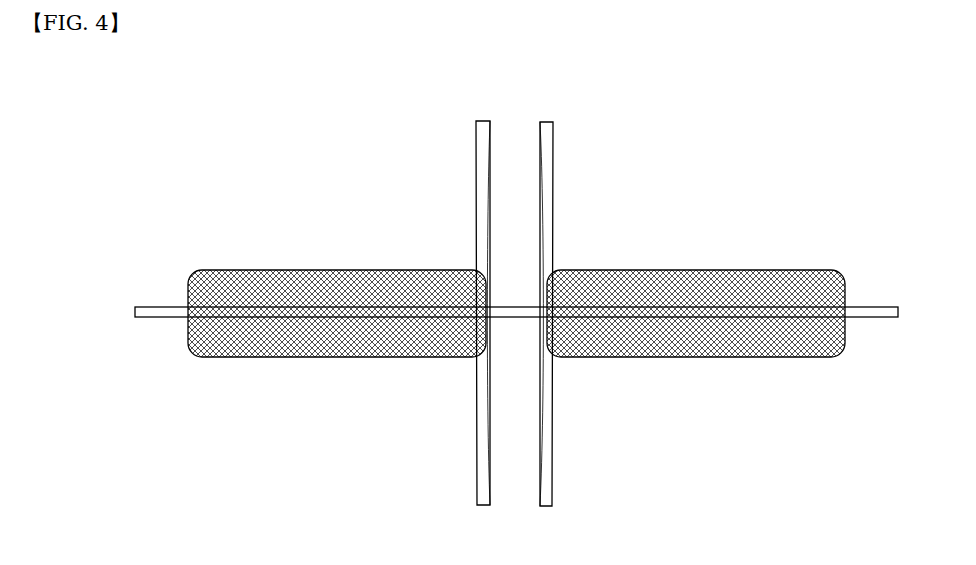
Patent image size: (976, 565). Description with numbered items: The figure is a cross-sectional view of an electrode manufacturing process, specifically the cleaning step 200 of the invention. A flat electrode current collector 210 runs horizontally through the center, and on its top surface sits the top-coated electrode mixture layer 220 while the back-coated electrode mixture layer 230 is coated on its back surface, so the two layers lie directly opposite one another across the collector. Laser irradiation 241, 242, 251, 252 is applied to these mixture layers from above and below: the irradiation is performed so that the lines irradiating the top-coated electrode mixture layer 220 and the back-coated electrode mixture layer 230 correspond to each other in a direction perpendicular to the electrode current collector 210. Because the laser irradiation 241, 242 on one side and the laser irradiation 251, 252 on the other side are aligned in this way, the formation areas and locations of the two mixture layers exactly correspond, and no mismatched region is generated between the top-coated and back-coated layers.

The cleaning step 200 is at (158, 116).
The electrode current collector 210 is at (863, 307).
The top-coated electrode mixture layer 220 is at (672, 270).
The back-coated electrode mixture layer 230 is at (700, 357).
The laser irradiation 241 is at (478, 163).
The laser irradiation 242 is at (553, 157).
The laser irradiation 251 is at (478, 480).
The laser irradiation 252 is at (552, 477).